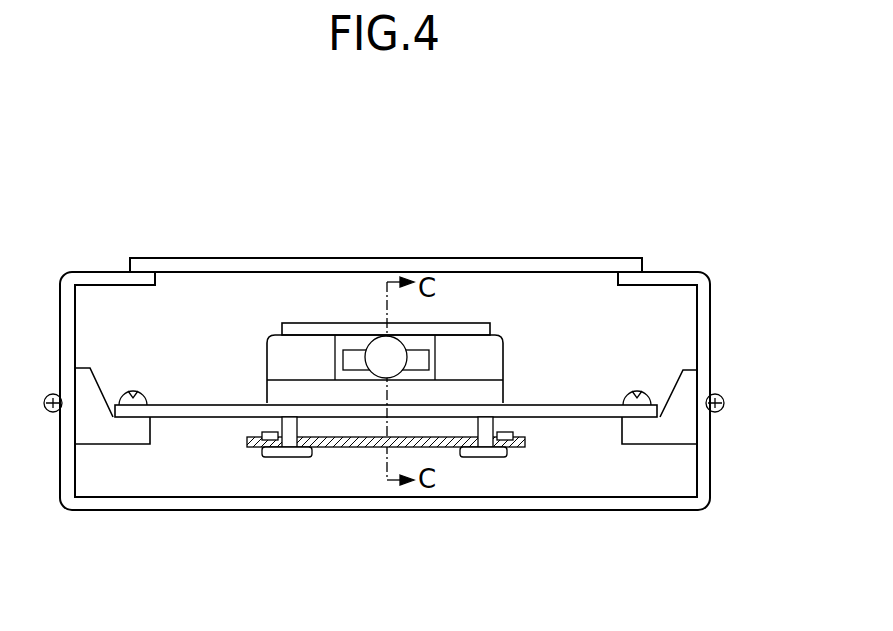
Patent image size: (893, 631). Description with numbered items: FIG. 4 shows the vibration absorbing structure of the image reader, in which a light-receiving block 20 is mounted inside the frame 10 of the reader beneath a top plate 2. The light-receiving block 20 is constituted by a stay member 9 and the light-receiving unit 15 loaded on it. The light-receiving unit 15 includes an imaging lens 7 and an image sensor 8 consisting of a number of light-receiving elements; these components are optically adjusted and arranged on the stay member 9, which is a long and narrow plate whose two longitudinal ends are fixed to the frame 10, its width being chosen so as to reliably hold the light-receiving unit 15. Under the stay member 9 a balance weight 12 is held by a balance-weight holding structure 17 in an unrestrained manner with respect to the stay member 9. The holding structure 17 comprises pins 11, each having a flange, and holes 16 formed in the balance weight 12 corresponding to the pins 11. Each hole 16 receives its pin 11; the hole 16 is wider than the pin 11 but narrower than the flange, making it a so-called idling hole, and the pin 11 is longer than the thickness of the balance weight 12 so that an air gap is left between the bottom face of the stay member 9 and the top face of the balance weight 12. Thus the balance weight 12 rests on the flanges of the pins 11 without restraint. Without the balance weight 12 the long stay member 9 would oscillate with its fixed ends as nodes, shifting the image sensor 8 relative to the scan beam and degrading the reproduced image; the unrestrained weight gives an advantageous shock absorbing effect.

The top plate 2 is at (470, 258).
The imaging lens 7 is at (403, 345).
The image sensor 8 is at (360, 350).
The stay member 9 is at (597, 405).
The frame 10 is at (712, 330).
The pin 11 is at (293, 457).
The balance weight 12 is at (355, 447).
The light-receiving unit 15 is at (401, 343).
The hole 16 is at (258, 436).
The balance-weight holding structure 17 is at (372, 490).
The light-receiving block 20 is at (242, 388).